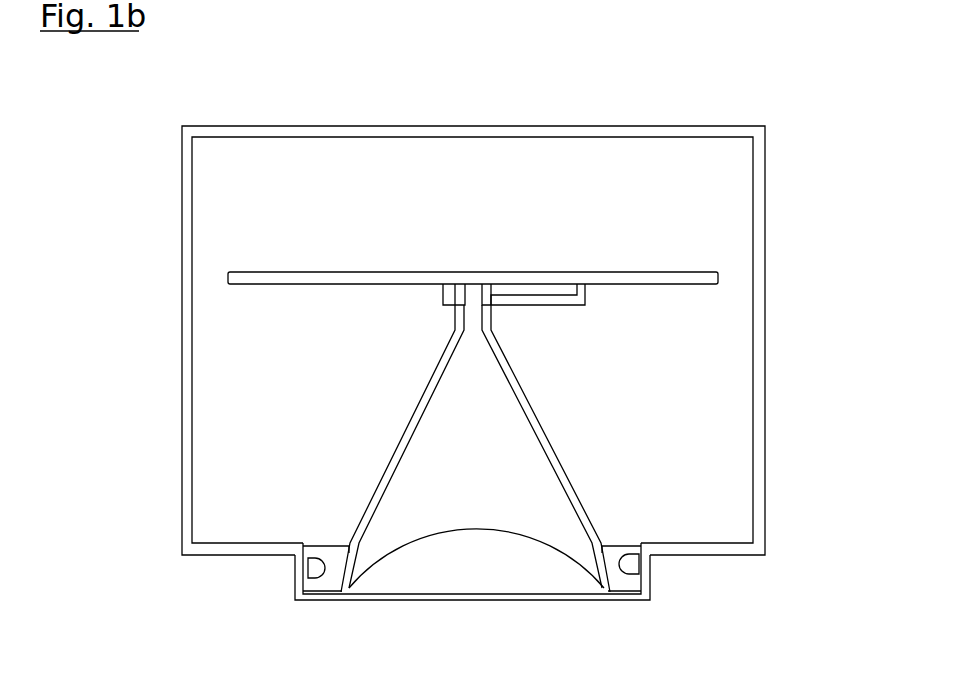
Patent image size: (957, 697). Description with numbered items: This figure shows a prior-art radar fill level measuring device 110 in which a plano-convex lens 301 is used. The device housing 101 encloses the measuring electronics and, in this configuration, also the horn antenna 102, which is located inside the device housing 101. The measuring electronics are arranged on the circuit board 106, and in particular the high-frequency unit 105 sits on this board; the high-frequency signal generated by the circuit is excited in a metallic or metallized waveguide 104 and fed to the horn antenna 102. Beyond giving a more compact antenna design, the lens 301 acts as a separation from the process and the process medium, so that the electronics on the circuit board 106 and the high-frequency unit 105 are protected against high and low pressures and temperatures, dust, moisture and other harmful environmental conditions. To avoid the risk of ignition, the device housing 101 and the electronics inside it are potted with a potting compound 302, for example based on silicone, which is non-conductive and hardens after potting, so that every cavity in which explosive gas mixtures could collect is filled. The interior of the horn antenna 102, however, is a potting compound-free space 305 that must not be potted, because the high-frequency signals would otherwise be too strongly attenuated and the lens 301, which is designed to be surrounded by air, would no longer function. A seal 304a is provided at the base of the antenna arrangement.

The loudspeaker assembly 110 is at (153, 180).
The device housing 101 is at (763, 320).
The horn antenna 102 is at (400, 435).
The waveguide 104 is at (457, 318).
The high-frequency unit 105 is at (548, 292).
The circuit board 106 is at (327, 275).
The plano-convex lens 301 is at (398, 583).
The potting compound 302 is at (227, 522).
The seal 304a is at (632, 567).
The potting compound-free space 305 is at (498, 462).